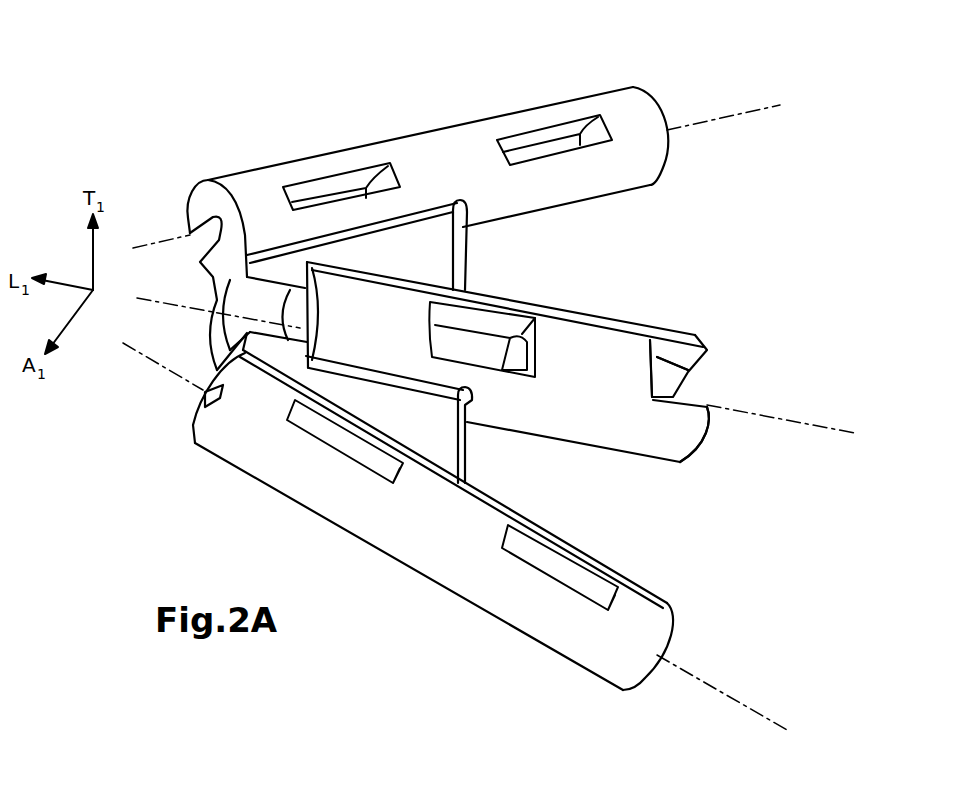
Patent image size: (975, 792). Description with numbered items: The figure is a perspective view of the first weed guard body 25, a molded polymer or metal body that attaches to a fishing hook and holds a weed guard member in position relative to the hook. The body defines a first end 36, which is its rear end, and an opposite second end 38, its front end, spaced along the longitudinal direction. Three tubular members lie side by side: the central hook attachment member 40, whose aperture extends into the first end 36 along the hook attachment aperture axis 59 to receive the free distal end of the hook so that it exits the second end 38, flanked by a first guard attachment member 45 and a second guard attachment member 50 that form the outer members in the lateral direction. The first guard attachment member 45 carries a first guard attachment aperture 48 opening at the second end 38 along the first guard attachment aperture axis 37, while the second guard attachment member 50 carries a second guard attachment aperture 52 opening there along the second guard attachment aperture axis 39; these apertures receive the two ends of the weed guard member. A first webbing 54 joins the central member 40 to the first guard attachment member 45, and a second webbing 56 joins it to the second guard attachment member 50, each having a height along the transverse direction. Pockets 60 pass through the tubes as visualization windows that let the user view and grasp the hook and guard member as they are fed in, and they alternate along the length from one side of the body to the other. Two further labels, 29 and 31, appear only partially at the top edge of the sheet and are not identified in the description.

The first weed guard body 25 is at (613, 63).
The frame member 29 is at (85, 3).
The frame member 31 is at (168, 3).
The first end 36 is at (203, 333).
The first guard attachment aperture axis 37 is at (733, 113).
The second end 38 is at (695, 448).
The second guard attachment aperture axis 39 is at (728, 697).
The hook attachment member 40 is at (605, 320).
The first guard attachment member 45 is at (450, 127).
The first guard attachment aperture 48 is at (320, 182).
The second guard attachment member 50 is at (387, 553).
The second guard attachment aperture 52 is at (557, 583).
The first webbing 54 is at (465, 255).
The second webbing 56 is at (467, 453).
The hook attachment aperture axis 59 is at (785, 410).
The pockets 60 is at (357, 167).